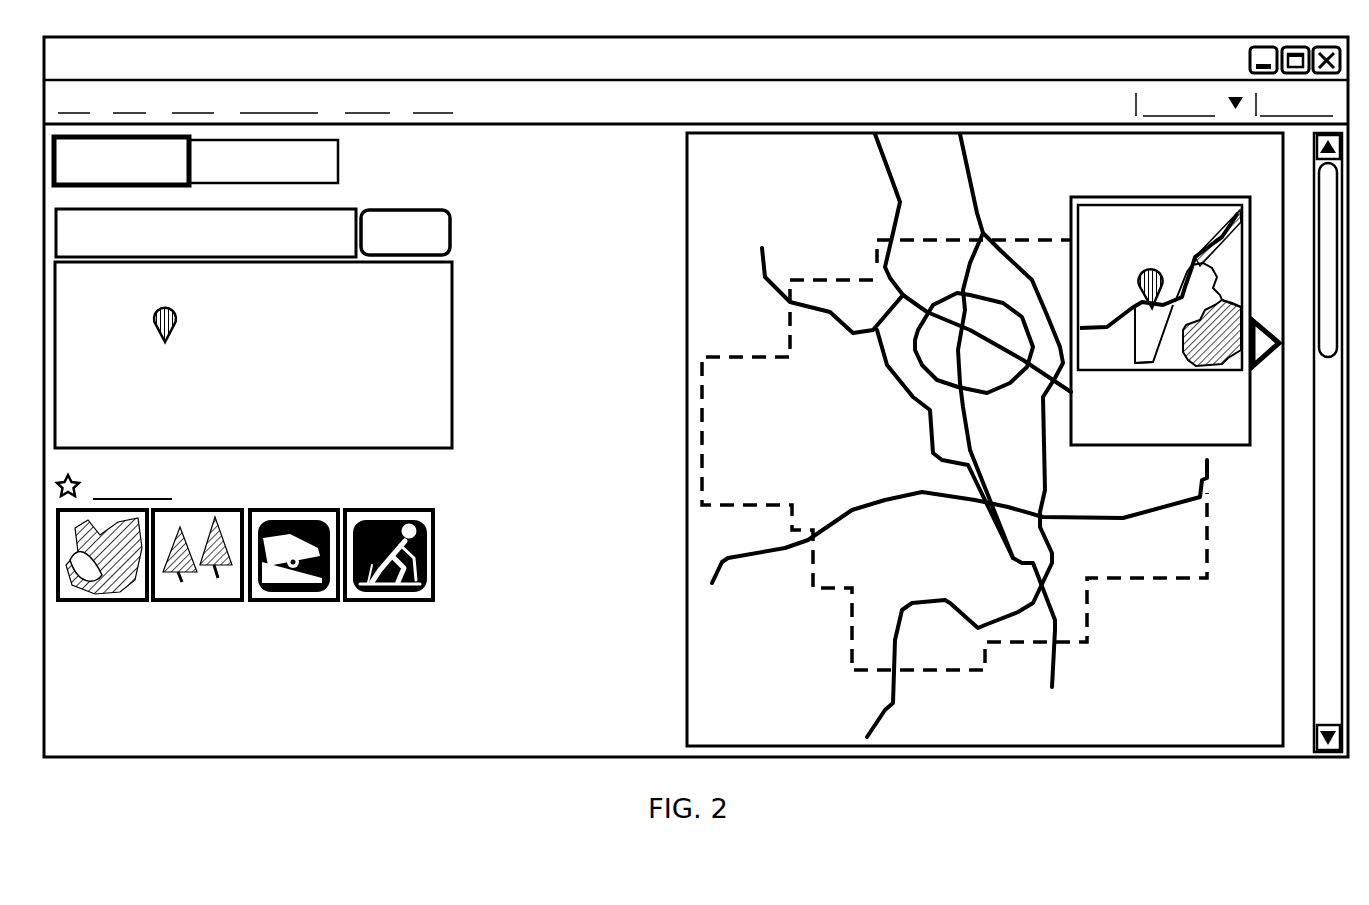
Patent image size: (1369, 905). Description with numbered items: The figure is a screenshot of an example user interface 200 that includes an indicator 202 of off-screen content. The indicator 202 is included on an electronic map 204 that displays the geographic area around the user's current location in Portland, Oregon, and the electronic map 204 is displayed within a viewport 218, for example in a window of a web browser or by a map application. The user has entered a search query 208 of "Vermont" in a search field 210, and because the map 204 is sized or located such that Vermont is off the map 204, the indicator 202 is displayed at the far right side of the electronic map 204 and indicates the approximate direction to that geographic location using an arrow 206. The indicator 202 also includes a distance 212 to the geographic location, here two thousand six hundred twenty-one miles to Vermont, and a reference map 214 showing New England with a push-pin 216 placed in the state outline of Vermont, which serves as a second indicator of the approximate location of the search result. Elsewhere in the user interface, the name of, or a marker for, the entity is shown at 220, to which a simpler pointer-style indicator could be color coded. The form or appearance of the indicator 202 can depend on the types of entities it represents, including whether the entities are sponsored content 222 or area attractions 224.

The user interface 200 is at (207, 74).
The indicator 202 is at (1138, 197).
The electronic map 204 is at (755, 203).
The arrow 206 is at (1265, 369).
The search query 208 is at (200, 243).
The search field 210 is at (340, 209).
The distance 212 is at (1186, 383).
The reference map 214 is at (1117, 205).
The push-pin 216 is at (1152, 267).
The viewport 218 is at (686, 267).
The part of the user interface showing entity name or marker 220 is at (453, 292).
The sponsored content 222 is at (183, 492).
The area attractions 224 is at (472, 509).